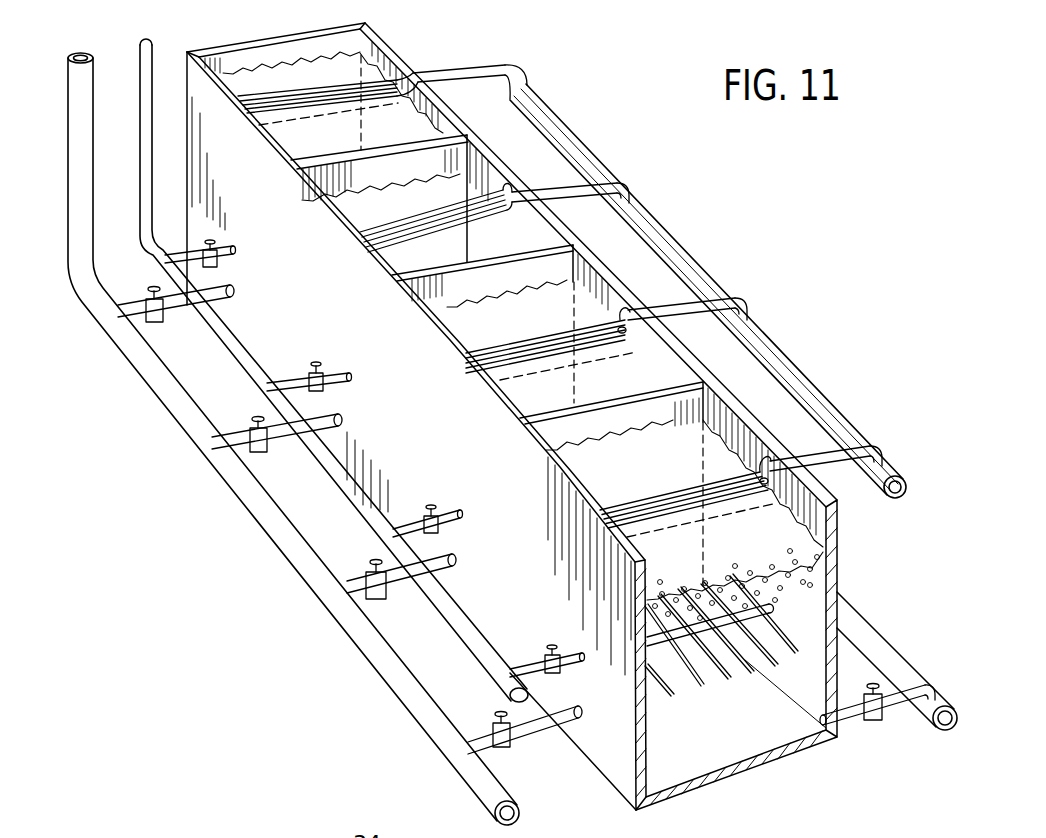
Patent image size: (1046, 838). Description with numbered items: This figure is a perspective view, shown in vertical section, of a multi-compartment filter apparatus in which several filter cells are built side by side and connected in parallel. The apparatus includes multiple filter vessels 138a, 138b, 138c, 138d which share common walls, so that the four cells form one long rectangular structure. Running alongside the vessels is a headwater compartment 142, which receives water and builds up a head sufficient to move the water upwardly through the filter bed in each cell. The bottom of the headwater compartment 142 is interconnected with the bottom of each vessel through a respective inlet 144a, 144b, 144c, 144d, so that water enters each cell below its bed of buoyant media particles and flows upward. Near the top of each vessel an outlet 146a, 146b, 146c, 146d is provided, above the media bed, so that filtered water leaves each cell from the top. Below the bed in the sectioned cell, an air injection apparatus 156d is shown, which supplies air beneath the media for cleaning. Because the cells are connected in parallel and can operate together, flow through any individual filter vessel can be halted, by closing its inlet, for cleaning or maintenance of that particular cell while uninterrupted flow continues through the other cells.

The headwater compartment 142 is at (77, 92).
The filter vessel 138a is at (396, 43).
The filter vessel 138b is at (566, 222).
The filter vessel 138c is at (646, 304).
The filter vessel 138d is at (749, 416).
The outlet 146a is at (445, 100).
The outlet 146b is at (500, 193).
The outlet 146c is at (612, 311).
The outlet 146d is at (742, 459).
The inlet 144a is at (231, 288).
The inlet 144b is at (340, 416).
The inlet 144c is at (454, 556).
The inlet 144d is at (582, 703).
The air injection apparatus 156d is at (690, 689).